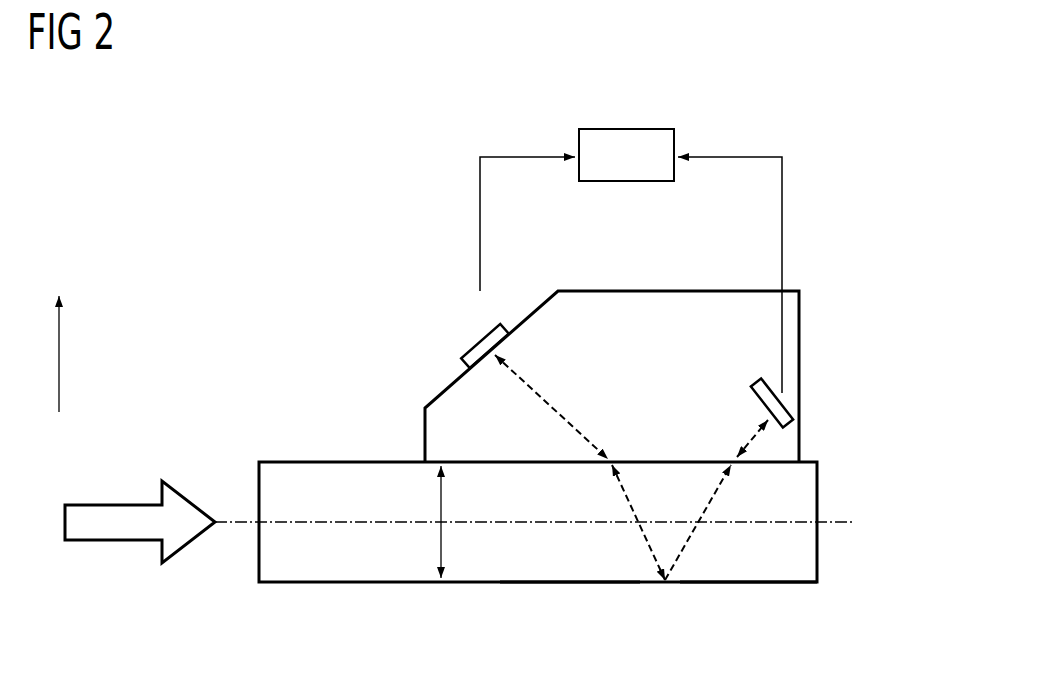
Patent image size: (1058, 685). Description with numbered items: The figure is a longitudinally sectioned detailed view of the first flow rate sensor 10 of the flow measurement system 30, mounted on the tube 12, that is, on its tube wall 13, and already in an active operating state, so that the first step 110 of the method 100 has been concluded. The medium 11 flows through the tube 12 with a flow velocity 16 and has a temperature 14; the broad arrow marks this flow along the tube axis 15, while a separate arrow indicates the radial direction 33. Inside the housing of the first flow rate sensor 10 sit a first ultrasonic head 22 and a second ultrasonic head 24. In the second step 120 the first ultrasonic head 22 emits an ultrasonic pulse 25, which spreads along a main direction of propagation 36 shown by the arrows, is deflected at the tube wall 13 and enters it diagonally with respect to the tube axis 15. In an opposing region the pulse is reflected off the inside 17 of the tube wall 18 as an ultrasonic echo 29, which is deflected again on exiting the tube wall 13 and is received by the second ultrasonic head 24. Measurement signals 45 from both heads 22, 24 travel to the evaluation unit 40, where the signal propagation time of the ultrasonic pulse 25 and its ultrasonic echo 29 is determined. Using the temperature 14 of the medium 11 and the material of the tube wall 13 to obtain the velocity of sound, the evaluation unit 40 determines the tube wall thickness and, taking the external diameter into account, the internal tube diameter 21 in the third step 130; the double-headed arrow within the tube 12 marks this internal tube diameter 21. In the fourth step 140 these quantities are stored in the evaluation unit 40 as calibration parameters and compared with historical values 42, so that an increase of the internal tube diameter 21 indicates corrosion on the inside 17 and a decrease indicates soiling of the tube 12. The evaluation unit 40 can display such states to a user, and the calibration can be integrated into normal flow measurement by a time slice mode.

The first flow rate sensor 10 is at (440, 423).
The medium 11 is at (136, 497).
The temperature 14 is at (136, 497).
The flow velocity 16 is at (108, 505).
The tube 12 is at (285, 583).
The tube wall 13 is at (750, 583).
The tube axis 15 is at (853, 523).
The inside 17 is at (603, 583).
The tube wall 18 is at (552, 583).
The internal tube diameter 21 is at (441, 497).
The first ultrasonic head 22 is at (484, 350).
The second ultrasonic head 24 is at (782, 408).
The ultrasonic pulse 25 is at (629, 467).
The main direction of propagation 36 is at (629, 467).
The second step 120 is at (547, 402).
The ultrasonic echo 29 is at (715, 495).
The flow measurement system 30 is at (110, 125).
The method 100 is at (110, 125).
The first step 110 is at (175, 141).
The radial direction 33 is at (59, 350).
The evaluation unit 40 is at (625, 118).
The historical values 42 is at (625, 118).
The third step 130 is at (625, 118).
The fourth step 140 is at (622, 129).
The measurement signals 45 is at (507, 155).